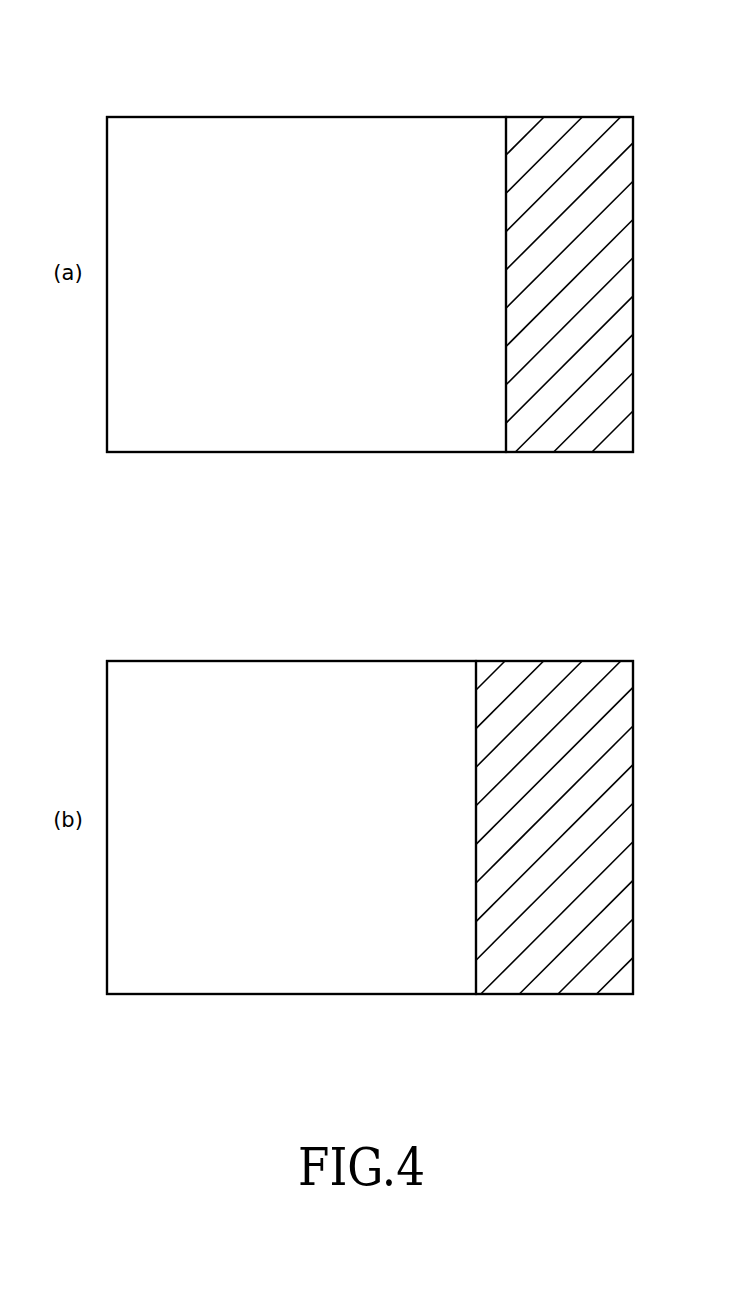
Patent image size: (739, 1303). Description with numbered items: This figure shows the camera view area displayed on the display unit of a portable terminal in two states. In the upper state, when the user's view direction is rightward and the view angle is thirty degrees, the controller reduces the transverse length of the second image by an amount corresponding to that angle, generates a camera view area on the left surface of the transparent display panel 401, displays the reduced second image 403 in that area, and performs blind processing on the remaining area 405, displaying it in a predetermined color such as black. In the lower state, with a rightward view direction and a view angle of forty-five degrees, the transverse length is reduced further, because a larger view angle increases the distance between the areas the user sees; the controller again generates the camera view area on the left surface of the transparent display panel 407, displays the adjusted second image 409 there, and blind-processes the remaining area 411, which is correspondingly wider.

The transparent display panel 401 is at (633, 107).
The second image 403 is at (343, 440).
The remaining area 405 is at (588, 440).
The transparent display panel 407 is at (633, 650).
The second image 409 is at (343, 982).
The remaining area 411 is at (588, 982).